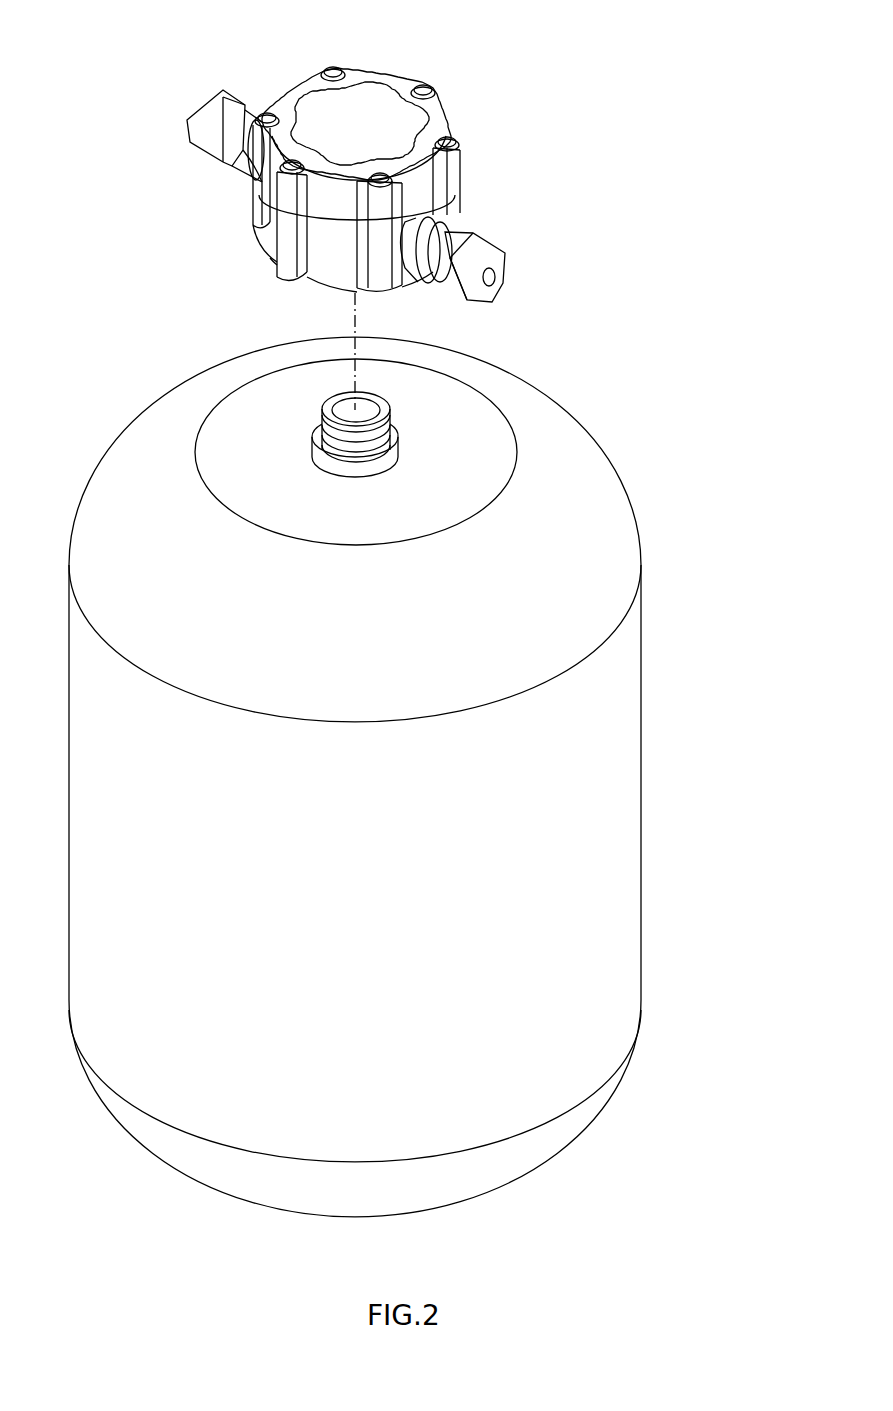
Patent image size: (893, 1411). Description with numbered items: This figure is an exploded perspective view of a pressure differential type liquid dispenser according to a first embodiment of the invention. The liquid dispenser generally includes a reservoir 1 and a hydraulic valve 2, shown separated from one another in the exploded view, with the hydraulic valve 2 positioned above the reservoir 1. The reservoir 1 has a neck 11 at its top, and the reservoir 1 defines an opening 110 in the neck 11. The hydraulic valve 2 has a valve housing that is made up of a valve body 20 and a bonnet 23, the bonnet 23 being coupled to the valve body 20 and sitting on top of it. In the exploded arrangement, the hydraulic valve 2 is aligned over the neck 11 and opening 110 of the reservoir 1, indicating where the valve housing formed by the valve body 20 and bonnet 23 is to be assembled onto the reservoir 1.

The reservoir 1 is at (622, 808).
The neck 11 is at (328, 437).
The opening 110 is at (343, 399).
The hydraulic valve 2 is at (363, 158).
The bonnet 23 is at (367, 93).
The valve body 20 is at (287, 260).